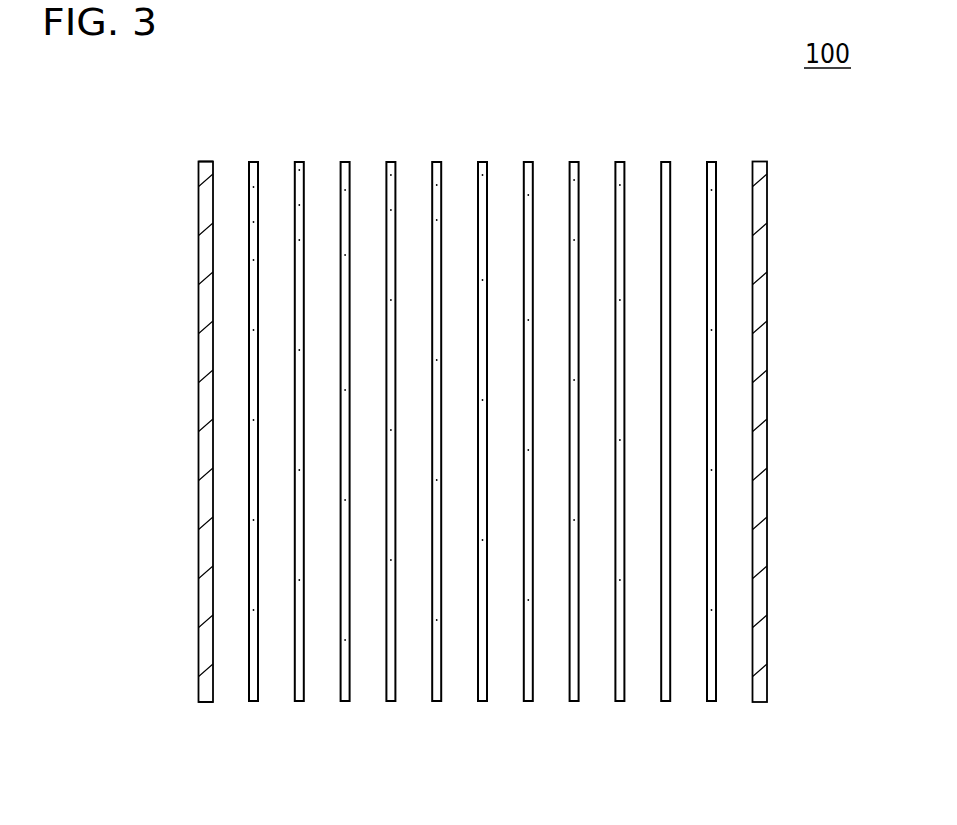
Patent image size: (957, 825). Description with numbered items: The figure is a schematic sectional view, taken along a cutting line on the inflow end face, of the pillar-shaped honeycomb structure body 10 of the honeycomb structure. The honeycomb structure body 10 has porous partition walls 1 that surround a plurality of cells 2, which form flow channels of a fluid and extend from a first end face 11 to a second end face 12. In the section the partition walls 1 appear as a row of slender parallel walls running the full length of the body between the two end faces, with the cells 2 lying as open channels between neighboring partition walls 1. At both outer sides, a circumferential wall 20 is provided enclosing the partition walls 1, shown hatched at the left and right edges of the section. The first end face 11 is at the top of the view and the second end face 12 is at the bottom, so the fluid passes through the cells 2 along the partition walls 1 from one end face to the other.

The partition walls 1 is at (663, 189).
The cells 2 is at (590, 222).
The honeycomb structure body 10 is at (774, 168).
The first end face 11 is at (222, 146).
The second end face 12 is at (237, 718).
The circumferential wall 20 is at (207, 315).